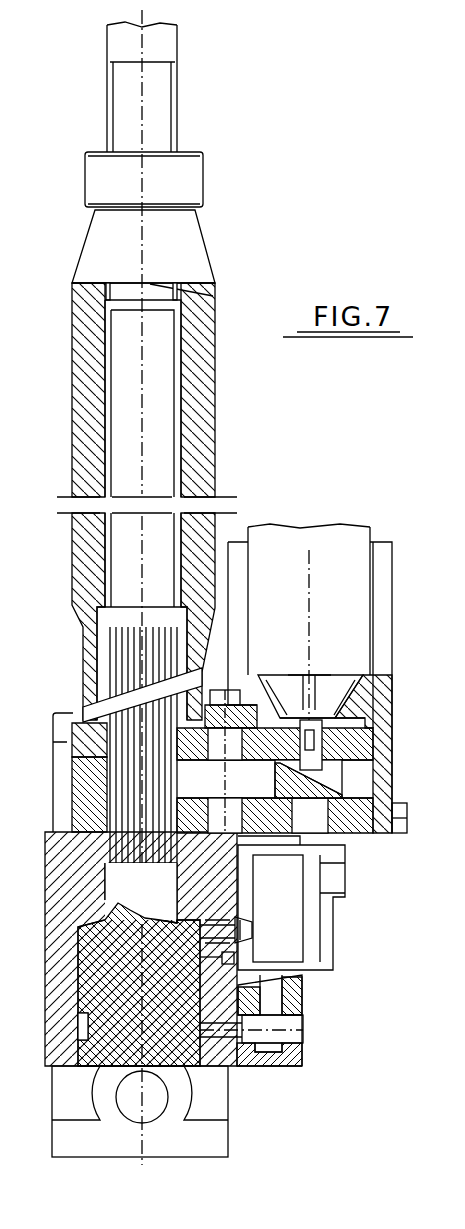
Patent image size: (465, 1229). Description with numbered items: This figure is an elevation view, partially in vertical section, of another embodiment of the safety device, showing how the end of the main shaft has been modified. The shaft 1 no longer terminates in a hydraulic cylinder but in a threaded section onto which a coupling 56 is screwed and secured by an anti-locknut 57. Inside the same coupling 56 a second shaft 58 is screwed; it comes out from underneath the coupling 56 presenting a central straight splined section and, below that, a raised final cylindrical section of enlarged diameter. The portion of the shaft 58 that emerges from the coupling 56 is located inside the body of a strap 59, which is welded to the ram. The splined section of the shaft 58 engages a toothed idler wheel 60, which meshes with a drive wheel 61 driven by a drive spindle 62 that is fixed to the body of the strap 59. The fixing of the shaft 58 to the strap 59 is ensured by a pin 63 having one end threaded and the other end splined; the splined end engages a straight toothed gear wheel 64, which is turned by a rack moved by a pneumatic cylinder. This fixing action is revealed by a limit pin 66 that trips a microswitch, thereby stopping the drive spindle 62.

The shaft 1 is at (160, 105).
The coupling 56 is at (207, 323).
The anti-locknut 57 is at (193, 182).
The shaft 58 is at (155, 382).
The strap 59 is at (73, 714).
The toothed idler wheel 60 is at (219, 789).
The drive wheel 61 is at (286, 779).
The drive spindle 62 is at (312, 742).
The pin 63 is at (290, 1030).
The straight toothed gear wheel 64 is at (267, 995).
The limit pin 66 is at (220, 921).